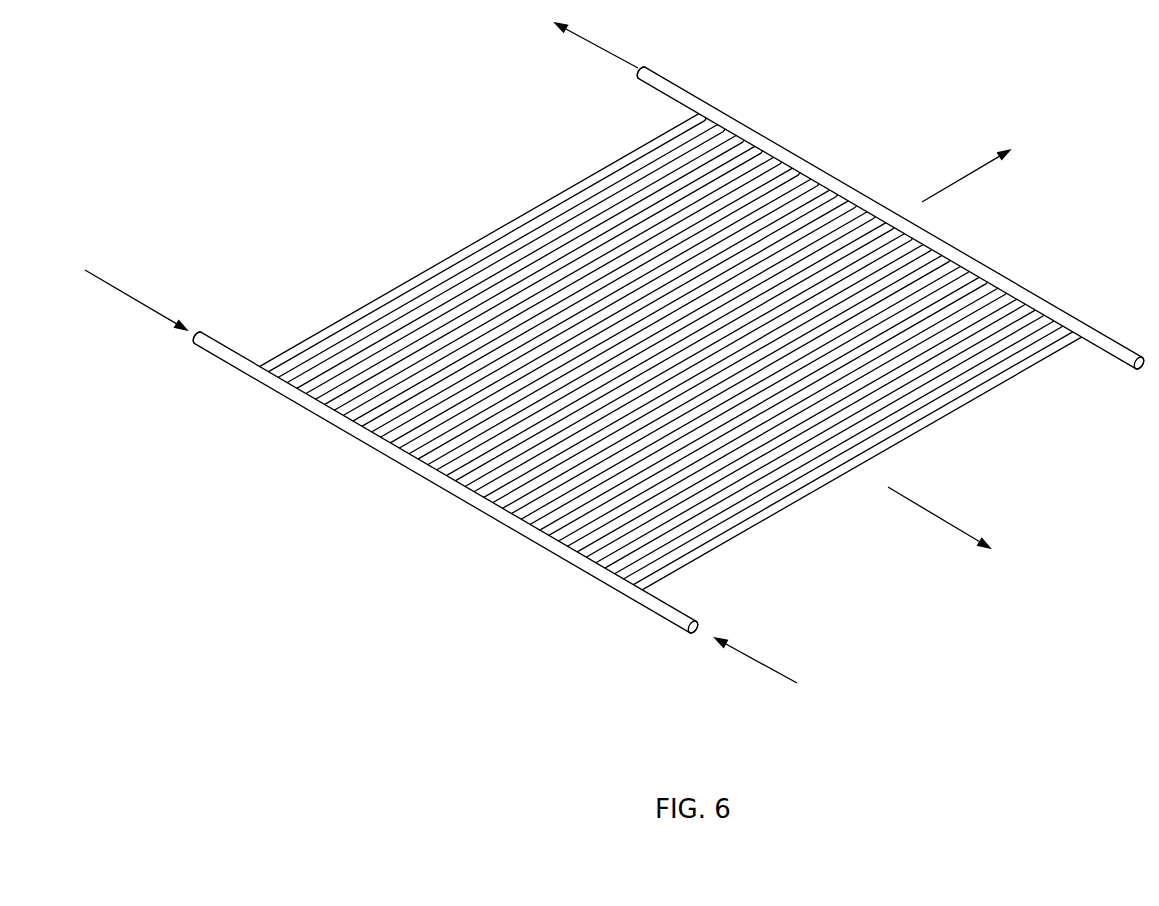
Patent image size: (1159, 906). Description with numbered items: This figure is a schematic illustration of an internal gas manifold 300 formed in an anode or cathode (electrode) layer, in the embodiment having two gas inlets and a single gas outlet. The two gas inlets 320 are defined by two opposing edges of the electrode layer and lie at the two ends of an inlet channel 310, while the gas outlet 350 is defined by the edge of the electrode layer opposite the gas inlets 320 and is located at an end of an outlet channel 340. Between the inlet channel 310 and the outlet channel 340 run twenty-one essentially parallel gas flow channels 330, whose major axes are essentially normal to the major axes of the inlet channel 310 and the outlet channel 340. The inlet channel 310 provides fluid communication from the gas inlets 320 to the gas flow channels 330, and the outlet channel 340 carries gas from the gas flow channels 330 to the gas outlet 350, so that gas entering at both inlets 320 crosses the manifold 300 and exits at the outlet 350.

The gas manifold 300 is at (618, 381).
The inlet channel 310 is at (428, 470).
The gas inlets 320 is at (202, 345).
The gas flow channels 330 is at (923, 382).
The outlet channel 340 is at (820, 165).
The gas outlet 350 is at (643, 82).